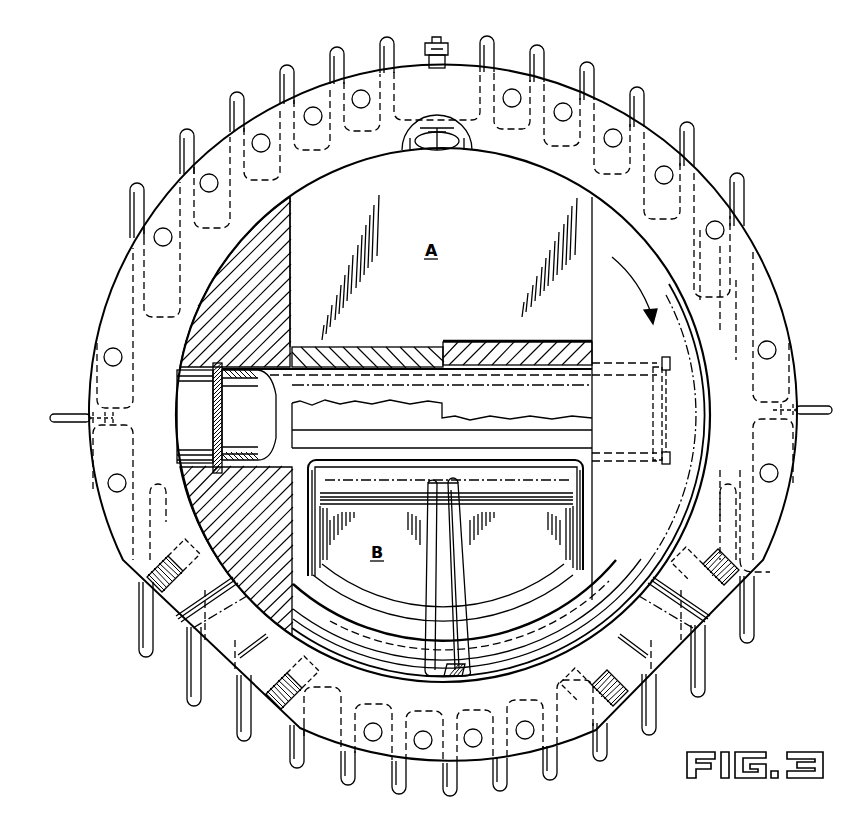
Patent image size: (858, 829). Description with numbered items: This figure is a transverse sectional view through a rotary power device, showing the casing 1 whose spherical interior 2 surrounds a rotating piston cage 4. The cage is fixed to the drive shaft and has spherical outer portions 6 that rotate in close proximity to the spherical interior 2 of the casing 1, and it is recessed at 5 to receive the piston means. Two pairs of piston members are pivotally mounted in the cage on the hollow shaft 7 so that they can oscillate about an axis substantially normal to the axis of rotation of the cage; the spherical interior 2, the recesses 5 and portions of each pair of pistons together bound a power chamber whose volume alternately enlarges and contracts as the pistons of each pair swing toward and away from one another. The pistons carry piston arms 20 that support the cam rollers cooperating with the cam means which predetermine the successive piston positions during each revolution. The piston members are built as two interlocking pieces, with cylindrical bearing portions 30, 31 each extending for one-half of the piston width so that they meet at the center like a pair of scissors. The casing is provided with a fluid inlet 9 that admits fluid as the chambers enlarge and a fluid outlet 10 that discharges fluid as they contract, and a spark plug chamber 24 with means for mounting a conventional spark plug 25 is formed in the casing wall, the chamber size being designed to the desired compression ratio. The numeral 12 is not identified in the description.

The casing 1 is at (797, 299).
The spherical interior 2 is at (662, 268).
The piston cage 4 is at (276, 246).
The recesses 5 is at (291, 272).
The spherical outer portions 6 is at (667, 292).
The hollow shaft 7 is at (496, 409).
The fluid inlet 9 is at (227, 650).
The fluid outlet 10 is at (667, 640).
The flange ring 12 is at (730, 385).
The piston arms 20 is at (437, 632).
The spark plug chamber 24 is at (455, 138).
The spark plug 25 is at (428, 44).
The cylindrical bearing portion 30 is at (407, 347).
The cylindrical bearing portion 31 is at (468, 344).